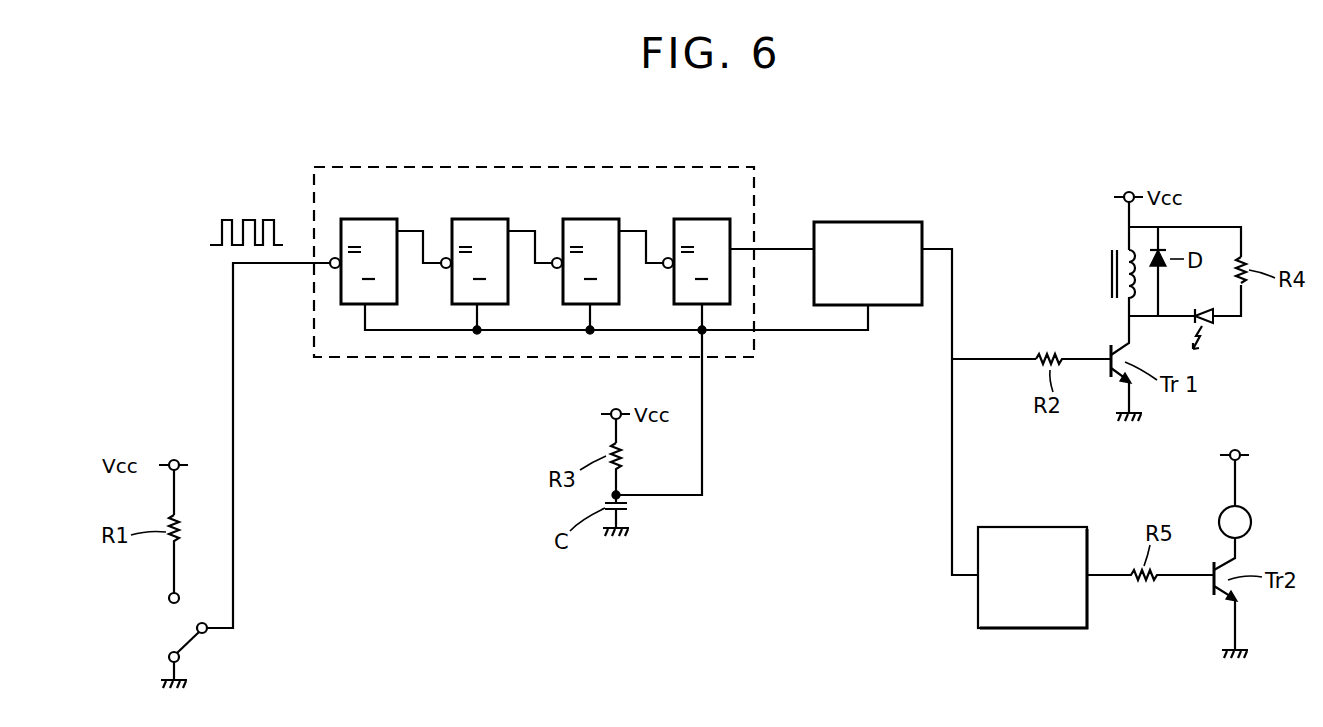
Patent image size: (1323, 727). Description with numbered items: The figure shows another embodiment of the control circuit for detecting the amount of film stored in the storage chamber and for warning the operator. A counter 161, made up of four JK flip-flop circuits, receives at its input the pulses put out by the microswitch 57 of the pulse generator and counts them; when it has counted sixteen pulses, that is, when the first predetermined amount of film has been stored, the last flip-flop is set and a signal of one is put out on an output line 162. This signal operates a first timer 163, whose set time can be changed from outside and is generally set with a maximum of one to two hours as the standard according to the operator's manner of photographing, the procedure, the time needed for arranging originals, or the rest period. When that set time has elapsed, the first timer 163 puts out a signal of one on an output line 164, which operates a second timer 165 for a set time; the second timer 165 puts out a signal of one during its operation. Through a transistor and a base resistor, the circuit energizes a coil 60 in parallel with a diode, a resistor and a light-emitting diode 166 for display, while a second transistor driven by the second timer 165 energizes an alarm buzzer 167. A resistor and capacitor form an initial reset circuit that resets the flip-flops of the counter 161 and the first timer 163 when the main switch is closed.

The microswitch 57 is at (190, 641).
The solenoid coil 60 is at (1110, 257).
The counter 161 is at (476, 167).
The output line 162 is at (780, 249).
The first timer 163 is at (905, 250).
The output line 164 is at (952, 328).
The second timer 165 is at (1020, 536).
The light-emitting diode 166 is at (1218, 320).
The alarm buzzer 167 is at (1247, 512).